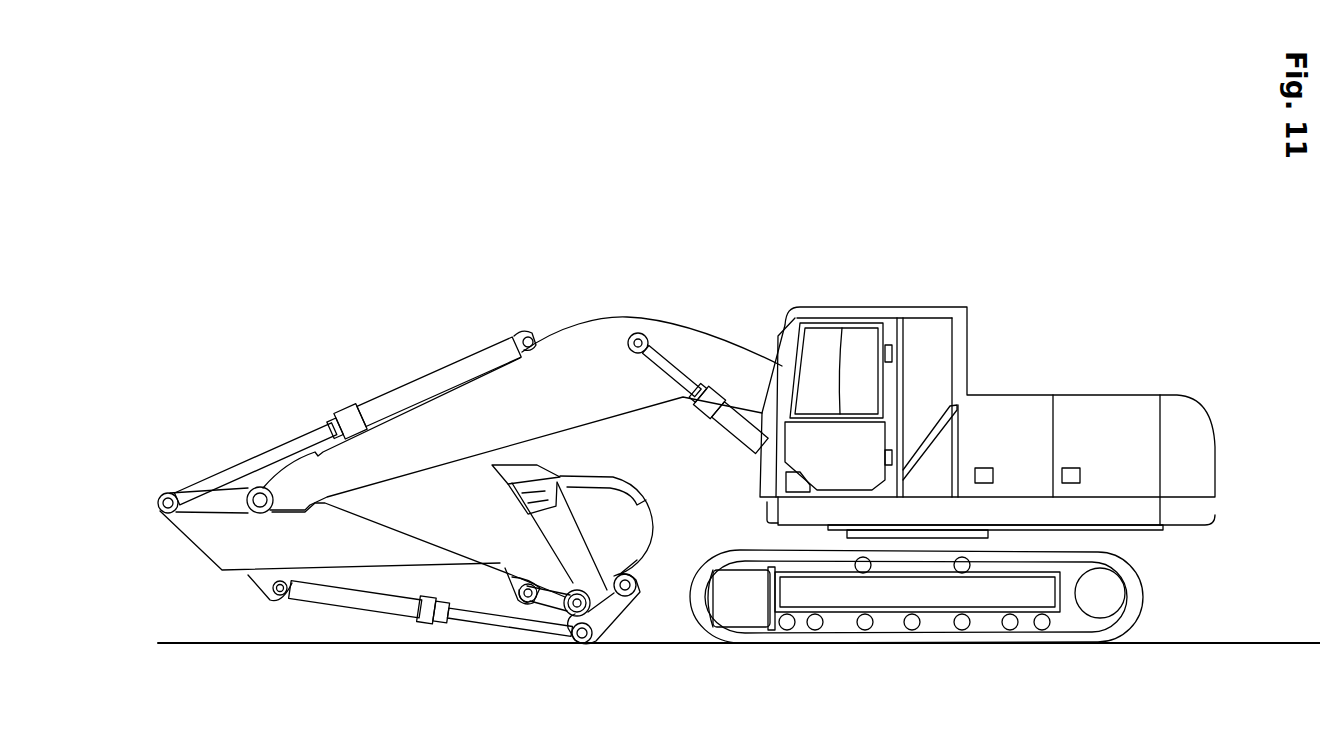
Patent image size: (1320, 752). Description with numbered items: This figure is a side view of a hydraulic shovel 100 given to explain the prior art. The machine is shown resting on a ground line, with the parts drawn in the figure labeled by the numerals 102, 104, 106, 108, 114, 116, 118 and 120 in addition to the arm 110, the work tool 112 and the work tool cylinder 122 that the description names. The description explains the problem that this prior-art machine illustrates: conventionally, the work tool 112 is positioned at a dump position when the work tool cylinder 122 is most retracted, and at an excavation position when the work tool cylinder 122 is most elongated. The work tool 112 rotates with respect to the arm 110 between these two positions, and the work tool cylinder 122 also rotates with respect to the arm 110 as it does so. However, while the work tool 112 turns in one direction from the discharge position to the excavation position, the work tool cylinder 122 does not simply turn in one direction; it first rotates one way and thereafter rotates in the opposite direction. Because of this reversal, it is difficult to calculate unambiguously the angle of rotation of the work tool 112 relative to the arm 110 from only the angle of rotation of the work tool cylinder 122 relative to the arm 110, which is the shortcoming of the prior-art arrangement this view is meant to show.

The hydraulic excavator 100 is at (1188, 231).
The lower travel body 102 is at (1145, 607).
The upper revolving body 104 is at (1008, 393).
The work implement 106 is at (627, 315).
The boom 108 is at (690, 345).
The arm 110 is at (208, 543).
The work tool 112 is at (637, 527).
The boom cylinder 114 is at (742, 432).
The arm cylinder 116 is at (460, 367).
The link 118 is at (553, 617).
The bucket link 120 is at (600, 620).
The work tool cylinder 122 is at (308, 595).